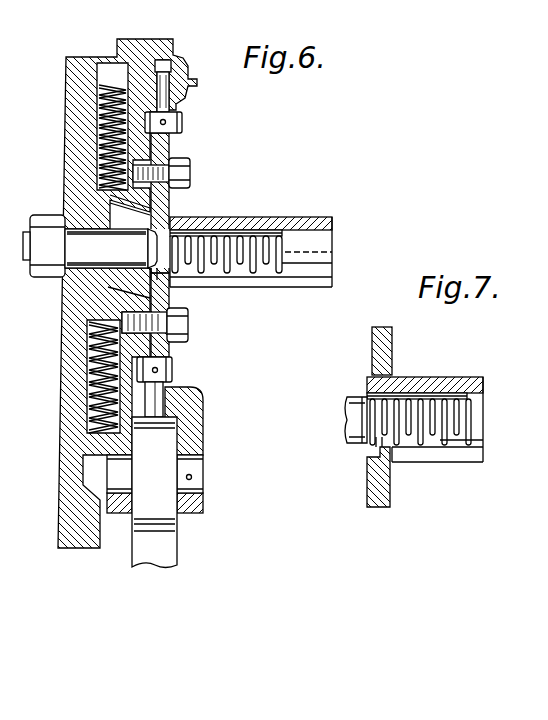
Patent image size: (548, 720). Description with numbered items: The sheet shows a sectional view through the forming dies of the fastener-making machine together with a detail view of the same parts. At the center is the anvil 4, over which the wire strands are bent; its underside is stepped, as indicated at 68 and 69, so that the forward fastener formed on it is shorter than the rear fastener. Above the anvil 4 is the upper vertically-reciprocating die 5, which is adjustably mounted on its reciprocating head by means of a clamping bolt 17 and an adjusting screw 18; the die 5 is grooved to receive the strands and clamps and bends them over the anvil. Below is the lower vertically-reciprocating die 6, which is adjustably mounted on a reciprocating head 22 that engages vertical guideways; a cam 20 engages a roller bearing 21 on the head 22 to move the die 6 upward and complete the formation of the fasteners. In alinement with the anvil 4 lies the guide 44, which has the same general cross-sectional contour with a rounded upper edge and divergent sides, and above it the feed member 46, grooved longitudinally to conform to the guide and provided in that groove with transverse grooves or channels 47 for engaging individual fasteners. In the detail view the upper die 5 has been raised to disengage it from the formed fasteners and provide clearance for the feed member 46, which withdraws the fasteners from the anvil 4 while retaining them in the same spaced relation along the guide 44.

In FIG. 6, the anvil 4 is at (148, 252).
In FIG. 7, the anvil 4 is at (353, 438).
In FIG. 6, the upper vertically-reciprocating die 5 is at (168, 198).
In FIG. 7, the upper vertically-reciprocating die 5 is at (393, 349).
In FIG. 6, the lower vertically-reciprocating die 6 is at (197, 290).
In FIG. 7, the lower vertically-reciprocating die 6 is at (390, 493).
In FIG. 6, the clamping bolt 17 is at (183, 169).
In FIG. 6, the adjusting screw 18 is at (183, 124).
In FIG. 6, the cam 20 is at (162, 540).
In FIG. 6, the roller bearing 21 is at (162, 506).
In FIG. 6, the reciprocating head 22 is at (203, 437).
In FIG. 6, the guide 44 is at (247, 218).
In FIG. 7, the guide 44 is at (418, 400).
In FIG. 6, the feed member 46 is at (290, 218).
In FIG. 7, the feed member 46 is at (467, 378).
In FIG. 6, the transverse grooves or channels 47 is at (330, 226).
In FIG. 7, the transverse grooves or channels 47 is at (484, 388).
In FIG. 6, the step 68 is at (150, 273).
In FIG. 7, the step 68 is at (382, 440).
In FIG. 6, the step 69 is at (178, 275).
In FIG. 7, the step 69 is at (388, 440).